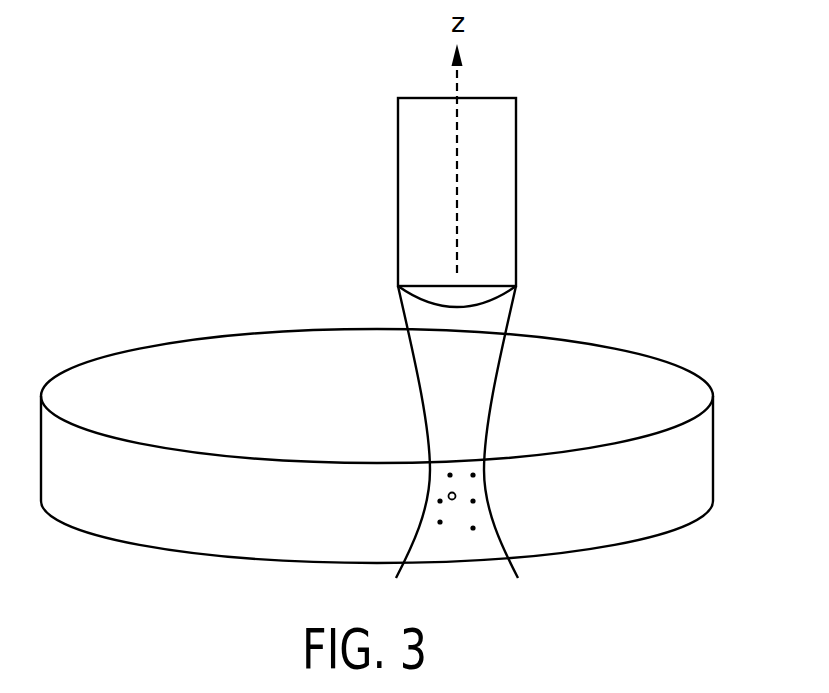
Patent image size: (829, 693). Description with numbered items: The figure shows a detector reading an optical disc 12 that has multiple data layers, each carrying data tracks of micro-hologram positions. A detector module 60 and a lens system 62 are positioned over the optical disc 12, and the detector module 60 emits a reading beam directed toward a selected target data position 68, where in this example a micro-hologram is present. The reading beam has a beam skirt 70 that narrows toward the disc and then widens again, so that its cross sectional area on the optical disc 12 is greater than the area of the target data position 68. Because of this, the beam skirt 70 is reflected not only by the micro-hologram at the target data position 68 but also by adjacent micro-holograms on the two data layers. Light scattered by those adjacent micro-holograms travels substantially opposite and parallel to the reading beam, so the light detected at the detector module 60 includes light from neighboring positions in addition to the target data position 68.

The optical disc 12 is at (703, 447).
The detector module 60 is at (518, 192).
The lens system 62 is at (505, 302).
The beam skirt 70 is at (414, 382).
The target data position 68 is at (453, 500).